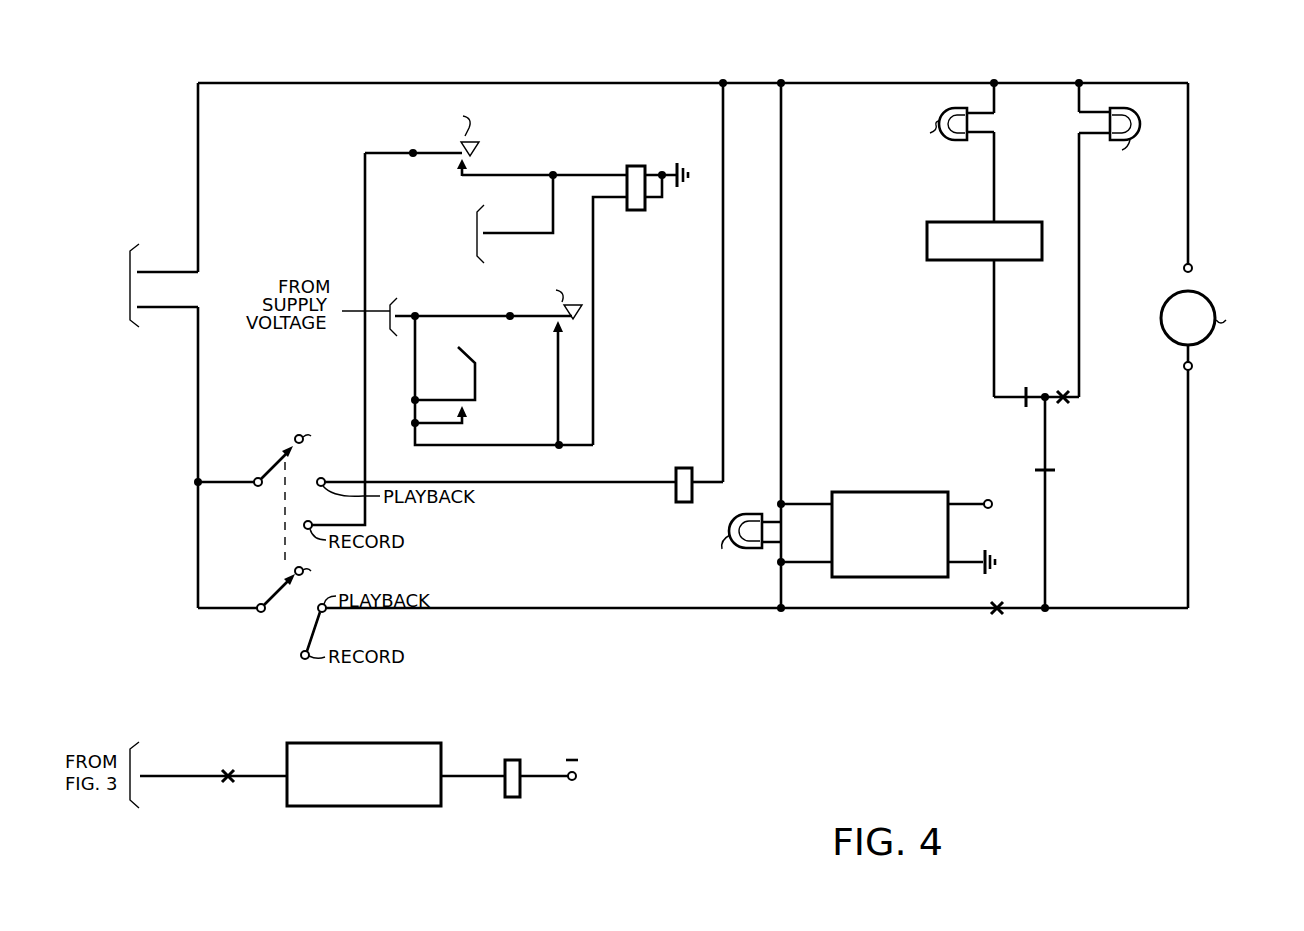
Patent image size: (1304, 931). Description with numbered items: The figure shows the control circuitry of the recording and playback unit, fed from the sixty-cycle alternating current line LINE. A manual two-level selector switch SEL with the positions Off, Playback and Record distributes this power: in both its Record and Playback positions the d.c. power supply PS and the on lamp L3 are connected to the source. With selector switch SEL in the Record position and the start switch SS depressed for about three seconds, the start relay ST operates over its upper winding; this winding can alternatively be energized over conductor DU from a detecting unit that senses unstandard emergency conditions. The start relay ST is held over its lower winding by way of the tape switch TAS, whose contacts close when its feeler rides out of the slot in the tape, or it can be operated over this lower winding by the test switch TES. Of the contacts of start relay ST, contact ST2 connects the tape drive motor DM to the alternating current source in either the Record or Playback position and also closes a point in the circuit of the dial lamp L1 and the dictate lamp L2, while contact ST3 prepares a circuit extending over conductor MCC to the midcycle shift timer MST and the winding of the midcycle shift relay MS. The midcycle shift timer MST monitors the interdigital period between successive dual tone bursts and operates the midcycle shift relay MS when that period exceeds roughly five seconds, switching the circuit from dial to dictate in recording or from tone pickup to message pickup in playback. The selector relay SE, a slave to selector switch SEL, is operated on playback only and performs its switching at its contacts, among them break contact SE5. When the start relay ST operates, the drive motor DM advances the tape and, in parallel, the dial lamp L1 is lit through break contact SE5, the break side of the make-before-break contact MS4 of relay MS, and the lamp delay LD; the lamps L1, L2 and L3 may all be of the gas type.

The line LINE is at (180, 309).
The selector switch SEL is at (260, 455).
The start switch SS is at (479, 153).
The start relay ST is at (637, 166).
The conductor from detecting unit DU is at (512, 226).
The test switch TES is at (545, 323).
The tape switch TAS is at (468, 412).
The selector relay SE is at (683, 468).
The on lamp L3 is at (760, 507).
The d.c. power supply PS is at (866, 492).
The start relay contact ST2 is at (997, 602).
The dial lamp L1 is at (960, 107).
The lamp delay LD is at (968, 200).
The dictate lamp L2 is at (1140, 120).
The make-before-break contact of midcycle shift relay MS4 is at (1041, 393).
The break contact of selector relay SE5 is at (1055, 470).
The drive motor DM is at (1227, 317).
The conductor MCC is at (179, 776).
The start relay contact ST3 is at (229, 775).
The midcycle shift timer MST is at (378, 728).
The midcycle shift relay MS is at (514, 760).